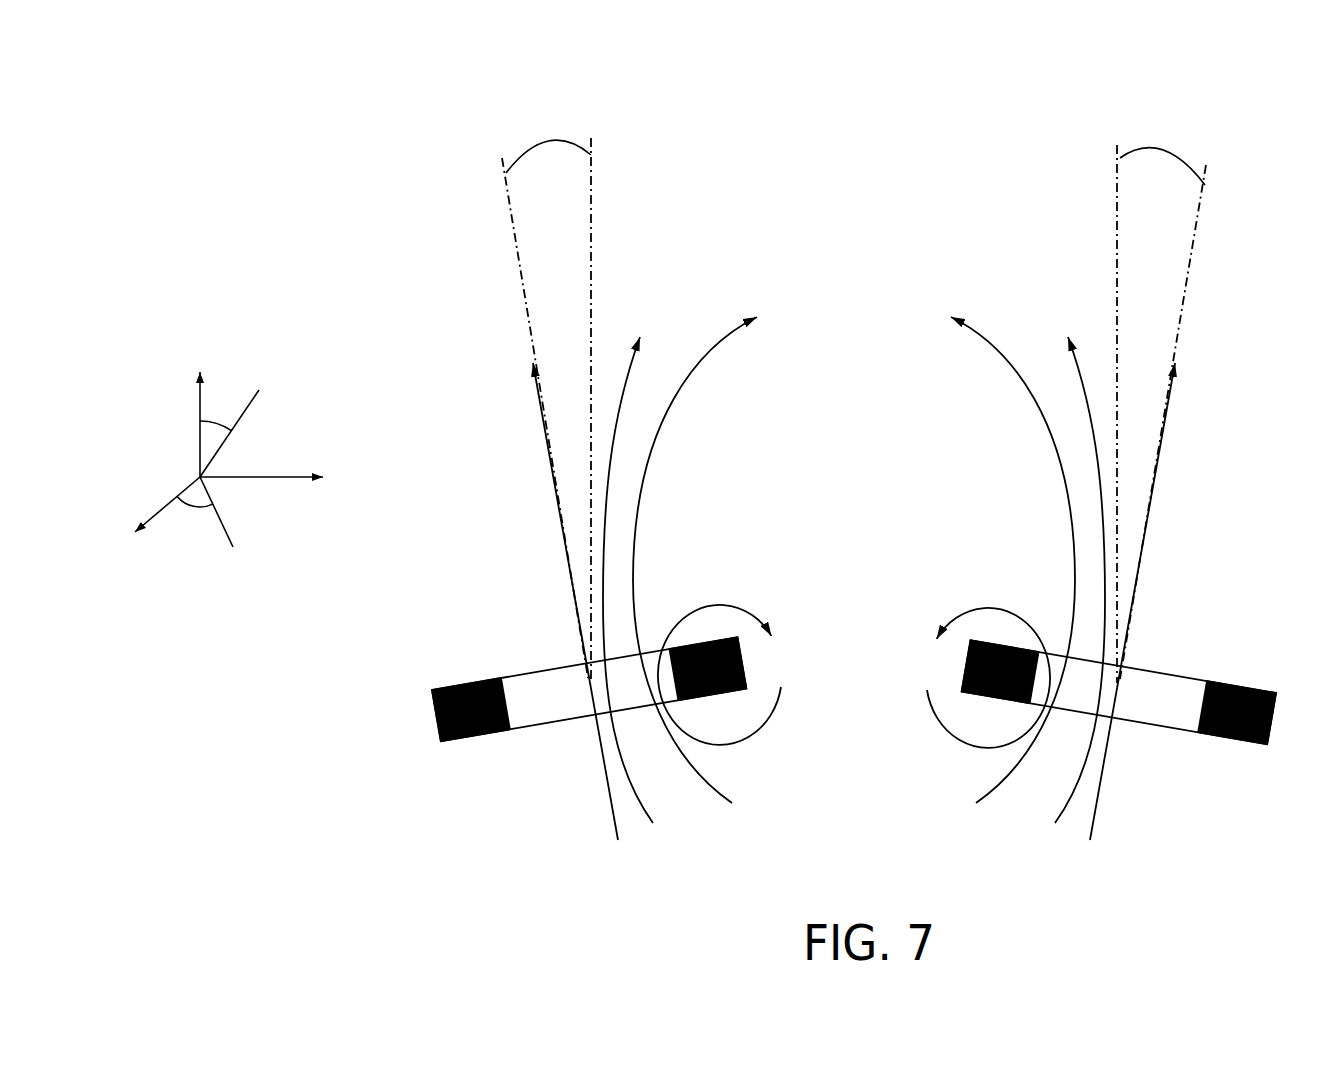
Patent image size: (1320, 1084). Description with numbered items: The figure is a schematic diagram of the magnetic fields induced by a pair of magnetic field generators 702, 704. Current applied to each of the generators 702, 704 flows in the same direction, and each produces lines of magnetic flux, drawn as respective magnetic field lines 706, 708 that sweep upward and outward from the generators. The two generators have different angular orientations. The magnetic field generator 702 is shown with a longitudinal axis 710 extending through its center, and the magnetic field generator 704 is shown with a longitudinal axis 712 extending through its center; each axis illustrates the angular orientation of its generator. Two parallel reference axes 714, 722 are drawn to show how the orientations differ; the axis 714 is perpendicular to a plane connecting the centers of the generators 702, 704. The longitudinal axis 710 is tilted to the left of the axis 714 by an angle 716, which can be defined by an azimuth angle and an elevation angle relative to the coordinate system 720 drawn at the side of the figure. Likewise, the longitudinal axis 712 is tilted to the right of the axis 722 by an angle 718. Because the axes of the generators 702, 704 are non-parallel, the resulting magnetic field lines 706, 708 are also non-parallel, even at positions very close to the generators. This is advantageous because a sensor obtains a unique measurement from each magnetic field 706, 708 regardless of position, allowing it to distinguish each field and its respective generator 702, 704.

The magnetic field generator 702 is at (577, 705).
The magnetic field generator 704 is at (1119, 707).
The magnetic field lines 706 is at (680, 549).
The magnetic field lines 708 is at (1028, 560).
The longitudinal axis 710 is at (529, 499).
The longitudinal axis 712 is at (1178, 502).
The axis 714 is at (620, 409).
The angle 716 is at (526, 146).
The angle 718 is at (1184, 149).
The coordinate system 720 is at (246, 467).
The axis 722 is at (1087, 414).